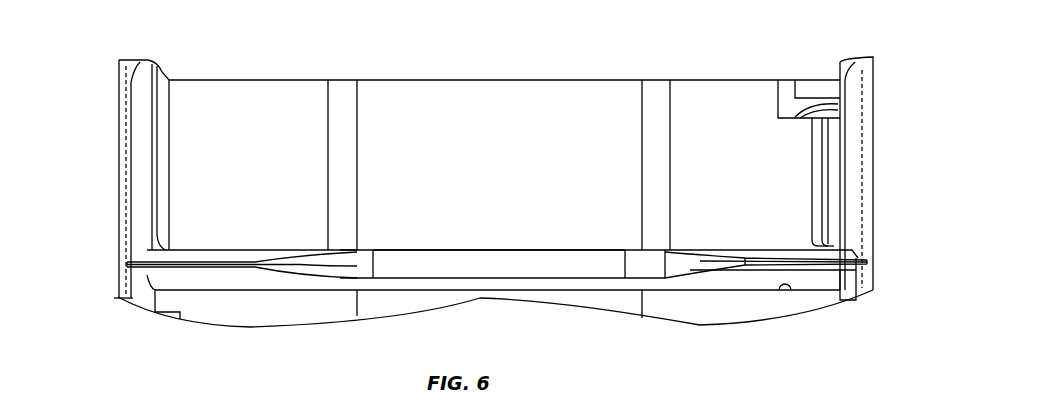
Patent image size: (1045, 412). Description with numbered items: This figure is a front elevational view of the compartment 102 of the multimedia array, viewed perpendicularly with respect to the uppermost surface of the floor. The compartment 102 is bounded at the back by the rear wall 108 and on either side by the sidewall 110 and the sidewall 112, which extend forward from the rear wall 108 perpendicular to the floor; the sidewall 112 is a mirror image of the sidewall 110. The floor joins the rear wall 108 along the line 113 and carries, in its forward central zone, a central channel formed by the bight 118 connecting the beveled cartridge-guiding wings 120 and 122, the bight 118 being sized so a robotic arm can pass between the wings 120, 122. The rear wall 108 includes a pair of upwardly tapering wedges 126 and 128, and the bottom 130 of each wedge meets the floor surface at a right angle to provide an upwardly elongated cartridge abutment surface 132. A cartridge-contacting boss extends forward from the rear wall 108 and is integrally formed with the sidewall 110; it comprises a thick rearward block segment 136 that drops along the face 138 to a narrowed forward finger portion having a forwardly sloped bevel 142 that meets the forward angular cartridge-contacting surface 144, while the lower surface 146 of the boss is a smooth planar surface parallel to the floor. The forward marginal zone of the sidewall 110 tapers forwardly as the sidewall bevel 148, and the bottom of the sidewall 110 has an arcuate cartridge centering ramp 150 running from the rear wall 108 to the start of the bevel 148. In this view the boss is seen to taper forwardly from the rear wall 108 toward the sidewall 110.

The compartment 102 is at (548, 110).
The rear wall 108 is at (518, 165).
The sidewall 110 is at (872, 125).
The sidewall 112 is at (140, 164).
The line 113 is at (420, 250).
The bight 118 is at (540, 265).
The beveled cartridge-guiding wing 120 is at (742, 252).
The beveled cartridge-guiding wing 122 is at (224, 252).
The upwardly tapering wedge 126 is at (336, 150).
The upwardly tapering wedge 128 is at (646, 152).
The bottom 130 is at (652, 250).
The cartridge abutment surface 132 is at (665, 172).
The rearward block segment 136 is at (778, 110).
The face 138 is at (806, 82).
The forwardly sloped bevel 142 is at (795, 116).
The cartridge-contacting surface 144 is at (806, 122).
The lower surface 146 is at (812, 140).
The sidewall bevel 148 is at (850, 203).
The arcuate cartridge centering ramp 150 is at (830, 247).